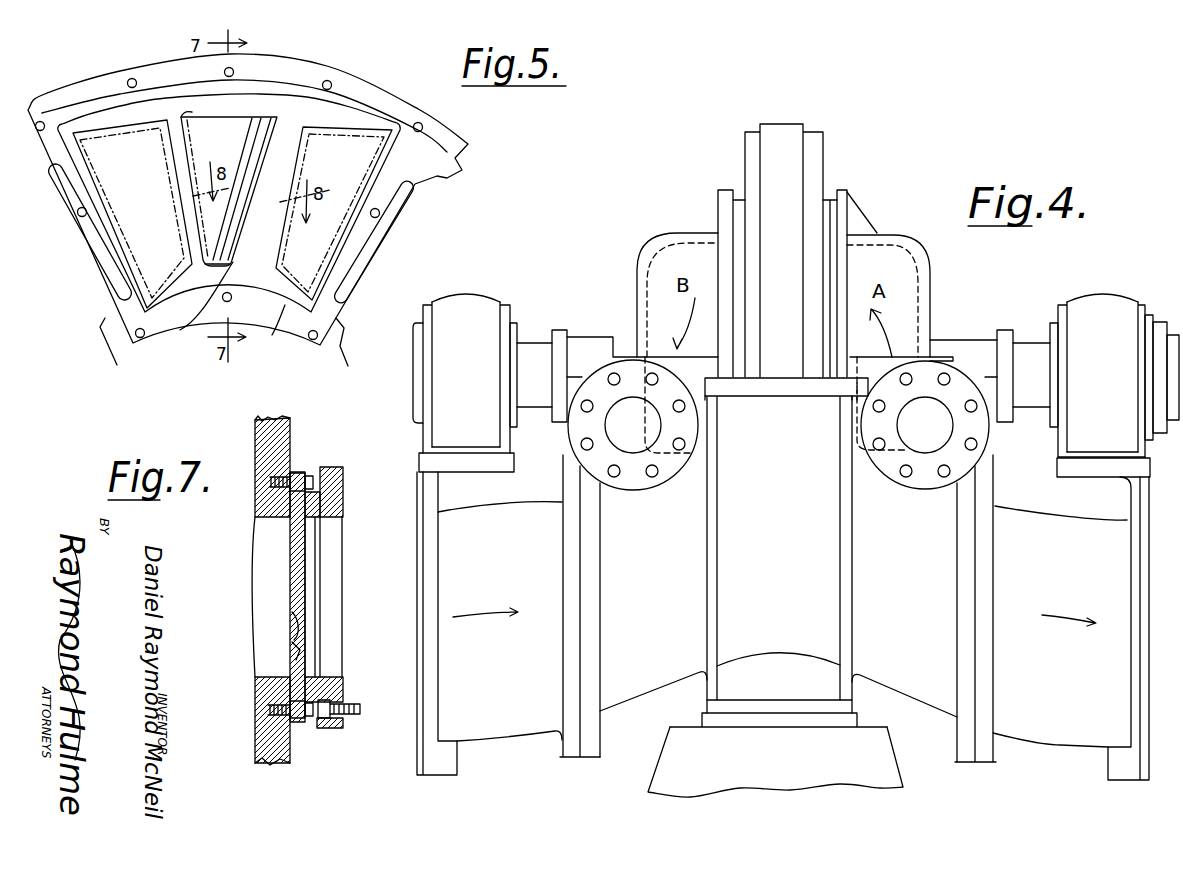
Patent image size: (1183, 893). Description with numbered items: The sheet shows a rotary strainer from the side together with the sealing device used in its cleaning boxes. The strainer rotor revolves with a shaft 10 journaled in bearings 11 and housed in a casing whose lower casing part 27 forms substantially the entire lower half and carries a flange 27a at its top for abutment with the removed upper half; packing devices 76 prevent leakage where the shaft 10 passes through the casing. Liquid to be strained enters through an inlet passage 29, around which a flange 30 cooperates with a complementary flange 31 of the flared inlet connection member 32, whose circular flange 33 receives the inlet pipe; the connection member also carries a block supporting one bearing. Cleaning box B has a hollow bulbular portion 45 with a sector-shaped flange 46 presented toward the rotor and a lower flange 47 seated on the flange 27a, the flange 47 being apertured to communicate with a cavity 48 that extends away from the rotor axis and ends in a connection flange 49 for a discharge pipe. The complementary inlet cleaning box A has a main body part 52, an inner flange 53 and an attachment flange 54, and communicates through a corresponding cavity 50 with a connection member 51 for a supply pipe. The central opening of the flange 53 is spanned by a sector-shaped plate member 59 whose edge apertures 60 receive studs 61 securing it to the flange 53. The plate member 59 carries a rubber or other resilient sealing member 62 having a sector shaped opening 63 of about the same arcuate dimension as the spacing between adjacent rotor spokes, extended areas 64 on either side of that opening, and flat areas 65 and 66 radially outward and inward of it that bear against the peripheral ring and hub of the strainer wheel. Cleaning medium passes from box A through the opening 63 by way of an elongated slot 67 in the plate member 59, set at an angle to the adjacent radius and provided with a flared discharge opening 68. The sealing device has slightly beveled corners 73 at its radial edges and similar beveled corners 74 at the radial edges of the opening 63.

In FIG. 4, the shaft 10 is at (531, 363).
In FIG. 4, the bearings 11 is at (472, 304).
In FIG. 4, the lower casing part 27 is at (775, 597).
In FIG. 4, the flange of lower casing part 27a is at (804, 432).
In FIG. 4, the inlet passage 29 is at (643, 692).
In FIG. 4, the flange 30 is at (593, 748).
In FIG. 4, the complementary flange 31 is at (562, 750).
In FIG. 4, the inlet connection member 32 is at (508, 730).
In FIG. 4, the flange 33 is at (425, 727).
In FIG. 4, the hollow bulbular portion 45 is at (640, 263).
In FIG. 4, the flange 46 is at (717, 207).
In FIG. 4, the flange 47 is at (663, 360).
In FIG. 4, the cavity 48 is at (712, 413).
In FIG. 4, the connection flange 49 is at (644, 480).
In FIG. 4, the cavity 50 is at (856, 412).
In FIG. 4, the connection member 51 is at (914, 480).
In FIG. 4, the main body part of box A 52 is at (920, 278).
In FIG. 7, the inner flange 53 is at (292, 470).
In FIG. 4, the inner flange 53 is at (852, 194).
In FIG. 4, the attachment flange 54 is at (947, 357).
In FIG. 5, the plate member 59 is at (372, 104).
In FIG. 7, the plate member 59 is at (298, 545).
In FIG. 4, the plate member 59 is at (840, 207).
In FIG. 5, the apertures 60 is at (327, 82).
In FIG. 7, the studs 61 is at (300, 480).
In FIG. 5, the resilient sealing member 62 is at (268, 325).
In FIG. 7, the resilient sealing member 62 is at (340, 684).
In FIG. 4, the resilient sealing member 62 is at (826, 207).
In FIG. 5, the sector shaped opening 63 is at (198, 307).
In FIG. 7, the sector shaped opening 63 is at (317, 677).
In FIG. 5, the extended areas 64 is at (232, 214).
In FIG. 5, the flat area 65 is at (229, 176).
In FIG. 5, the flat area 66 is at (232, 275).
In FIG. 5, the elongated slot 67 is at (251, 152).
In FIG. 7, the elongated slot 67 is at (292, 636).
In FIG. 5, the flared discharge opening 68 is at (232, 214).
In FIG. 7, the flared discharge opening 68 is at (292, 646).
In FIG. 5, the beveled corners 73 is at (60, 182).
In FIG. 5, the beveled corners 74 is at (262, 152).
In FIG. 4, the packing devices 76 is at (600, 341).